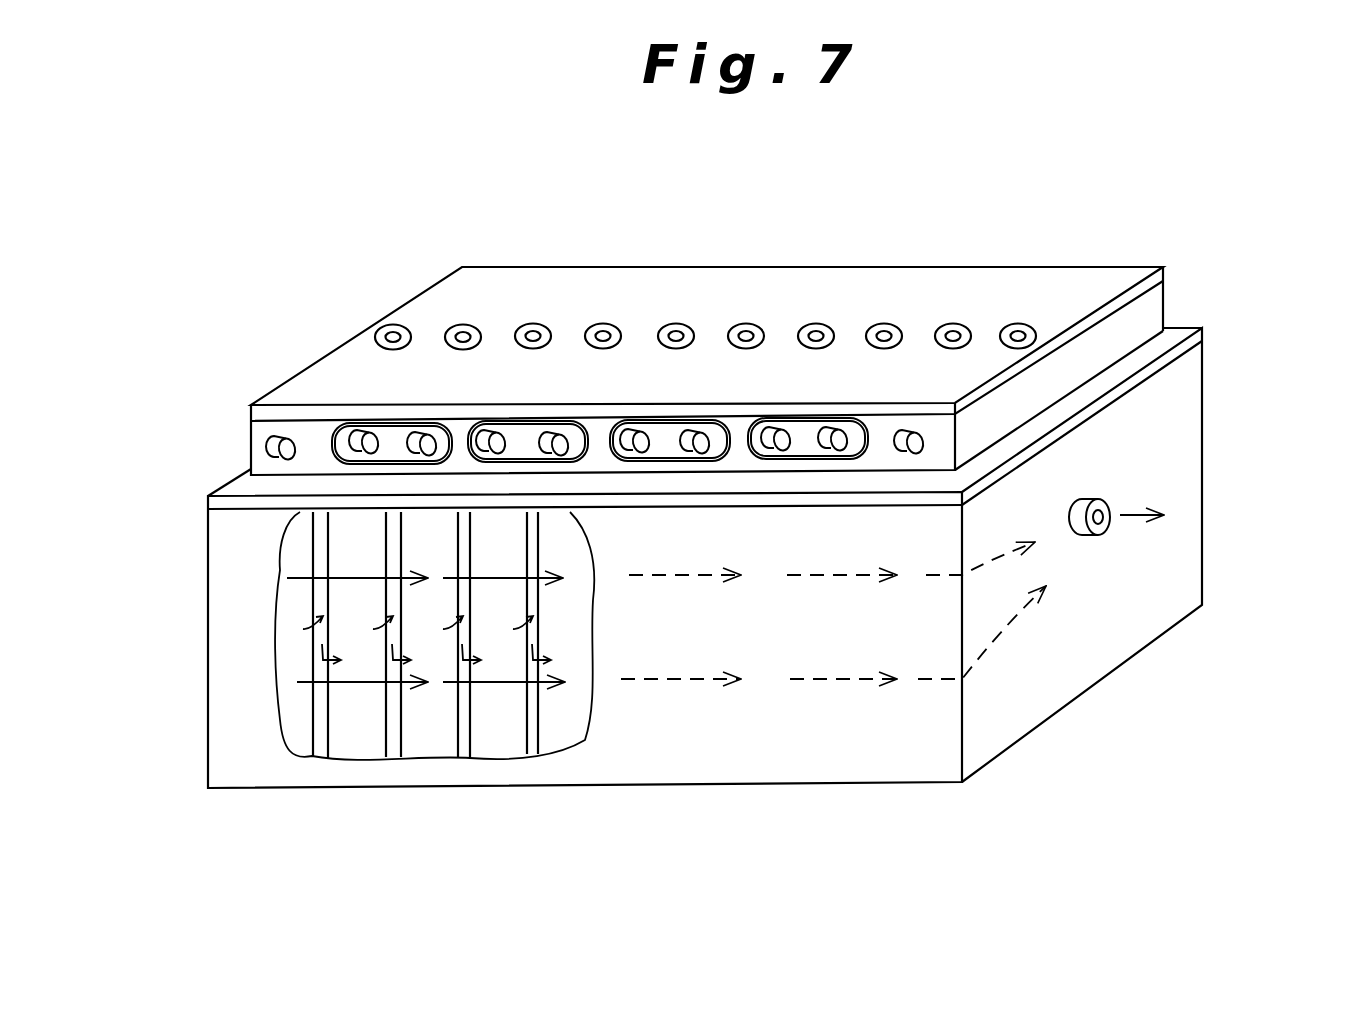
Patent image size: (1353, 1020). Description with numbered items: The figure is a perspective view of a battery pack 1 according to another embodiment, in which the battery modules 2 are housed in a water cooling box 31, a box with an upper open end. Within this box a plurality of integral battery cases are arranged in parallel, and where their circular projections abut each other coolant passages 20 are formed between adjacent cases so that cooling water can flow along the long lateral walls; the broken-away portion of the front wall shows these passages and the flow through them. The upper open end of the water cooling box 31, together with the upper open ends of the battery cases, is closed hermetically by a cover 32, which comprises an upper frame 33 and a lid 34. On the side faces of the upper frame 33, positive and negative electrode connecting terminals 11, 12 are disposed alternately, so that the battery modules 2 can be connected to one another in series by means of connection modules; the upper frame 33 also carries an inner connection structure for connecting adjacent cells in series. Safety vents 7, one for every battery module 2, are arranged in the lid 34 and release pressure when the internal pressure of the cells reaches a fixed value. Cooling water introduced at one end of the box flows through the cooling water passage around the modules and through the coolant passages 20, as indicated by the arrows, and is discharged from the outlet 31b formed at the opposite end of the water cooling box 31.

The battery pack 1 is at (178, 541).
The battery module 2 is at (300, 735).
The coolant passage 20 is at (322, 745).
The safety vent 7 is at (537, 324).
The positive electrode connecting terminal 11 is at (426, 436).
The negative electrode connecting terminal 12 is at (356, 445).
The water cooling box 31 is at (763, 737).
The outlet 31b is at (1090, 500).
The cover 32 is at (789, 334).
The upper frame 33 is at (760, 369).
The lid 34 is at (1090, 287).